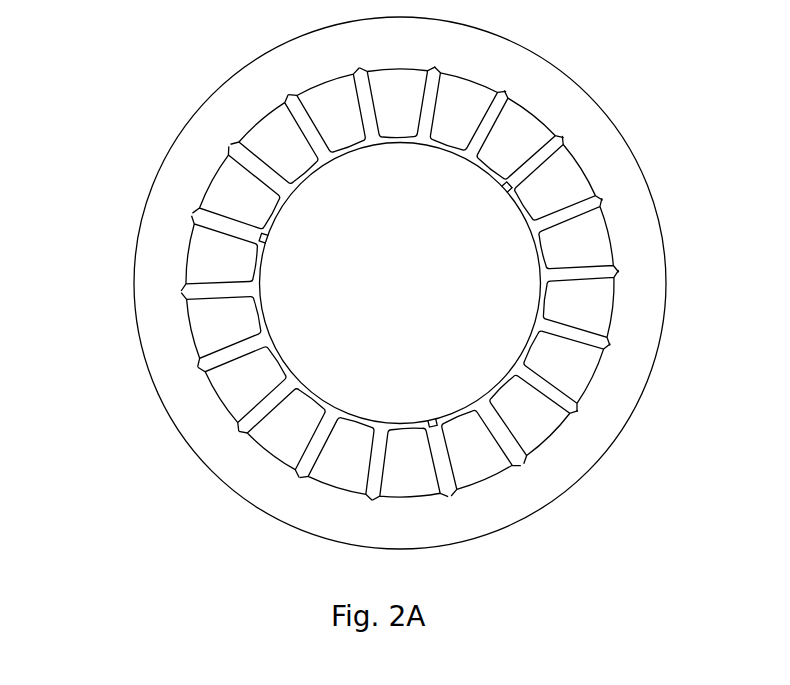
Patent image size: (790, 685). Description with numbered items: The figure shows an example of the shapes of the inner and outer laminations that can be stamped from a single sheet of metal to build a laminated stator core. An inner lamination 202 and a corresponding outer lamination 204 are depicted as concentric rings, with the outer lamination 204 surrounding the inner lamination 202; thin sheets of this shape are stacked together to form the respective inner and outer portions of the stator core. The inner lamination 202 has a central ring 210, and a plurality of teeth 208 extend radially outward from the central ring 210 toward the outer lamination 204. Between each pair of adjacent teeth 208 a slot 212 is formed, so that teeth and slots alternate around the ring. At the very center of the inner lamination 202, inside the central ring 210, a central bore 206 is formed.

The inner lamination 202 is at (371, 281).
The outer lamination 204 is at (153, 186).
The central bore 206 is at (440, 286).
The tooth 208 is at (341, 87).
The central ring 210 is at (399, 285).
The slot 212 is at (458, 112).